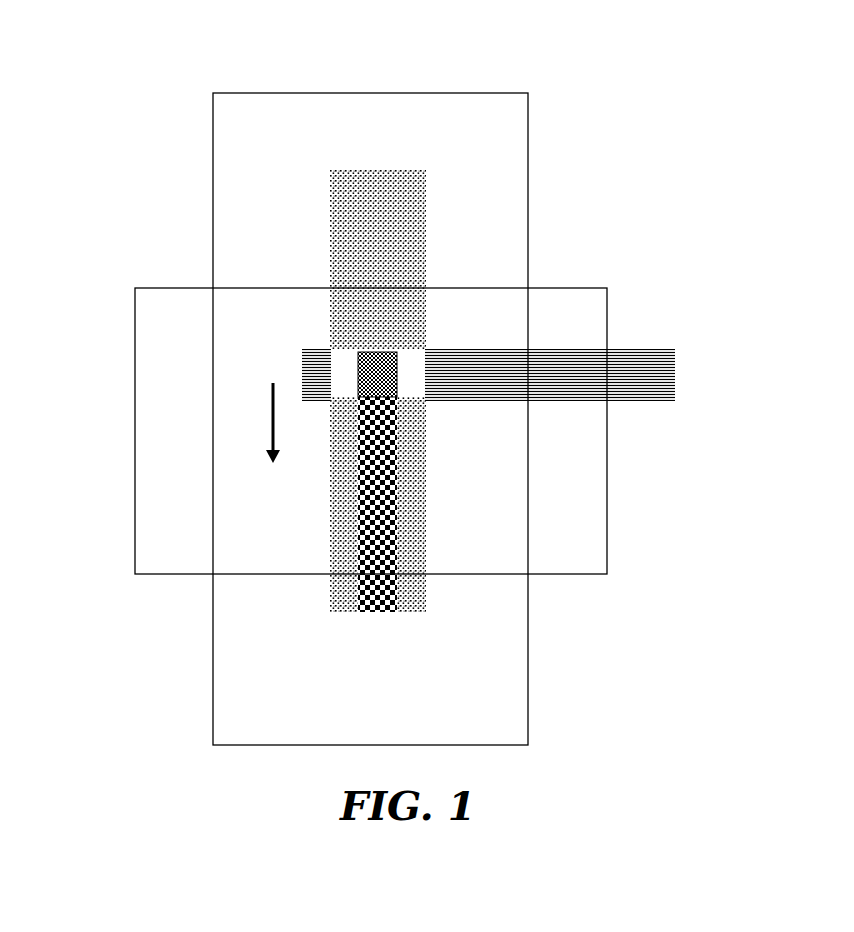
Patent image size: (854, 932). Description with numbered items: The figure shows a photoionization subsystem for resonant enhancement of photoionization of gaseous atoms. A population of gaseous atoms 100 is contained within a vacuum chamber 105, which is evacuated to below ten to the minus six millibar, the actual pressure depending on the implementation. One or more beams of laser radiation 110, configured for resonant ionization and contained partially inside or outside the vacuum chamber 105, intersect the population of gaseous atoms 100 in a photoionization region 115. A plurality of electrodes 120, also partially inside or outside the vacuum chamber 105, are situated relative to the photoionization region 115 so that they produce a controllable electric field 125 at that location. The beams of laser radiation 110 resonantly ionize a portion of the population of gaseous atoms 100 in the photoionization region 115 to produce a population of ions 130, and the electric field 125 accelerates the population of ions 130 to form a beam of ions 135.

The population of gaseous atoms 100 is at (330, 168).
The vacuum chamber 105 is at (372, 91).
The beams of laser radiation 110 is at (675, 348).
The photoionization region 115 is at (338, 349).
The electrodes 120 is at (607, 288).
The electric field 125 is at (265, 398).
The population of ions 130 is at (397, 378).
The beam of ions 135 is at (400, 485).